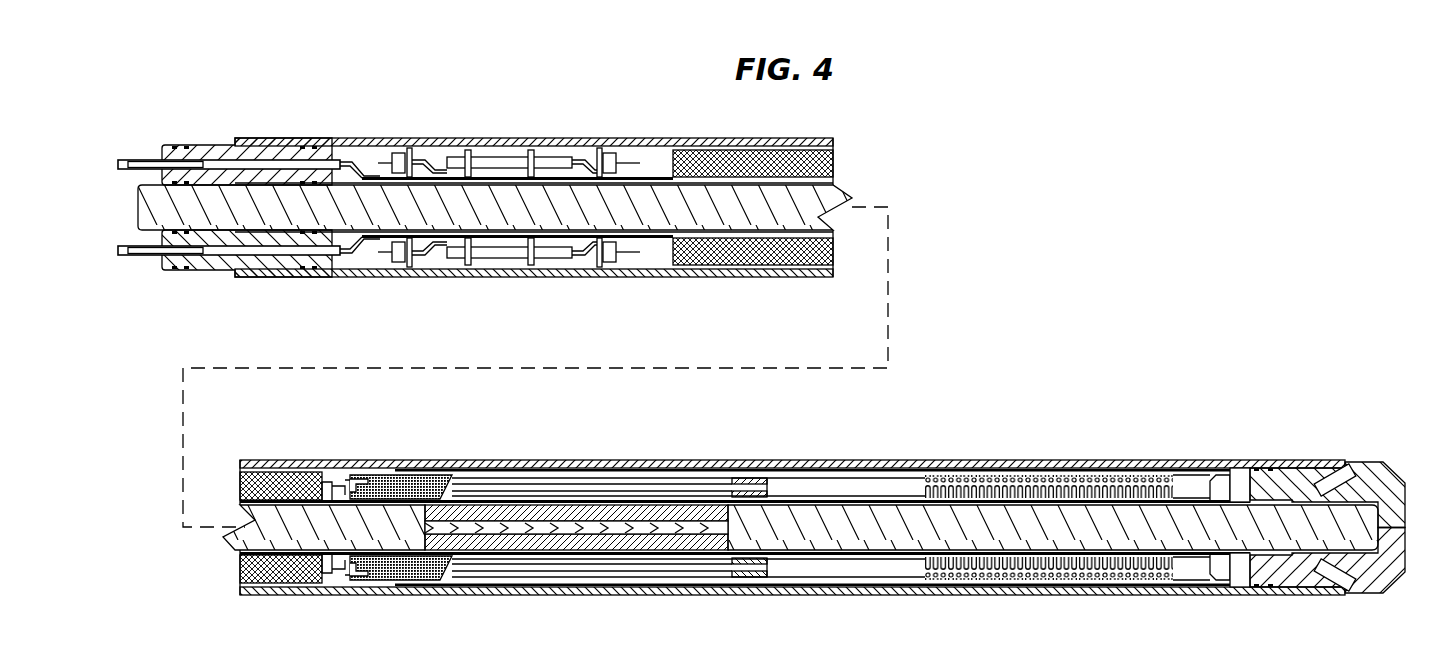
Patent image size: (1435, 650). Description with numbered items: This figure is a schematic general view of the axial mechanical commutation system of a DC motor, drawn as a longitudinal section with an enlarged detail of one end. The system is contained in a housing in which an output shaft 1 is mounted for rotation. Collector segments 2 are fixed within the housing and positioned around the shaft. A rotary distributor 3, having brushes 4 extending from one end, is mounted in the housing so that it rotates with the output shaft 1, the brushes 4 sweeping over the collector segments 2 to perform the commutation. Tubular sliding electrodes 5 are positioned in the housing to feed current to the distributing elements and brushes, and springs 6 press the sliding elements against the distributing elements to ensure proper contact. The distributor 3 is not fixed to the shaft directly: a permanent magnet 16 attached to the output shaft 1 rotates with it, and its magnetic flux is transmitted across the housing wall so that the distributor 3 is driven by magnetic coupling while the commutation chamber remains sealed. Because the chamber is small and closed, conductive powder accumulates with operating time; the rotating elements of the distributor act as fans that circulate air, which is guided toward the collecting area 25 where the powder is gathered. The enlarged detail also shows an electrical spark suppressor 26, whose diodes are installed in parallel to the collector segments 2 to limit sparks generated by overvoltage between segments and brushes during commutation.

The output shaft 1 is at (876, 518).
The collector segments 2 is at (378, 480).
The rotary distributor 3 is at (763, 455).
The brushes 4 is at (436, 576).
The tubular sliding electrodes 5 is at (920, 600).
The springs 6 is at (1091, 470).
The magnet 16 is at (618, 543).
The collecting area 25 is at (767, 263).
The electrical spark suppressor 26 is at (497, 150).